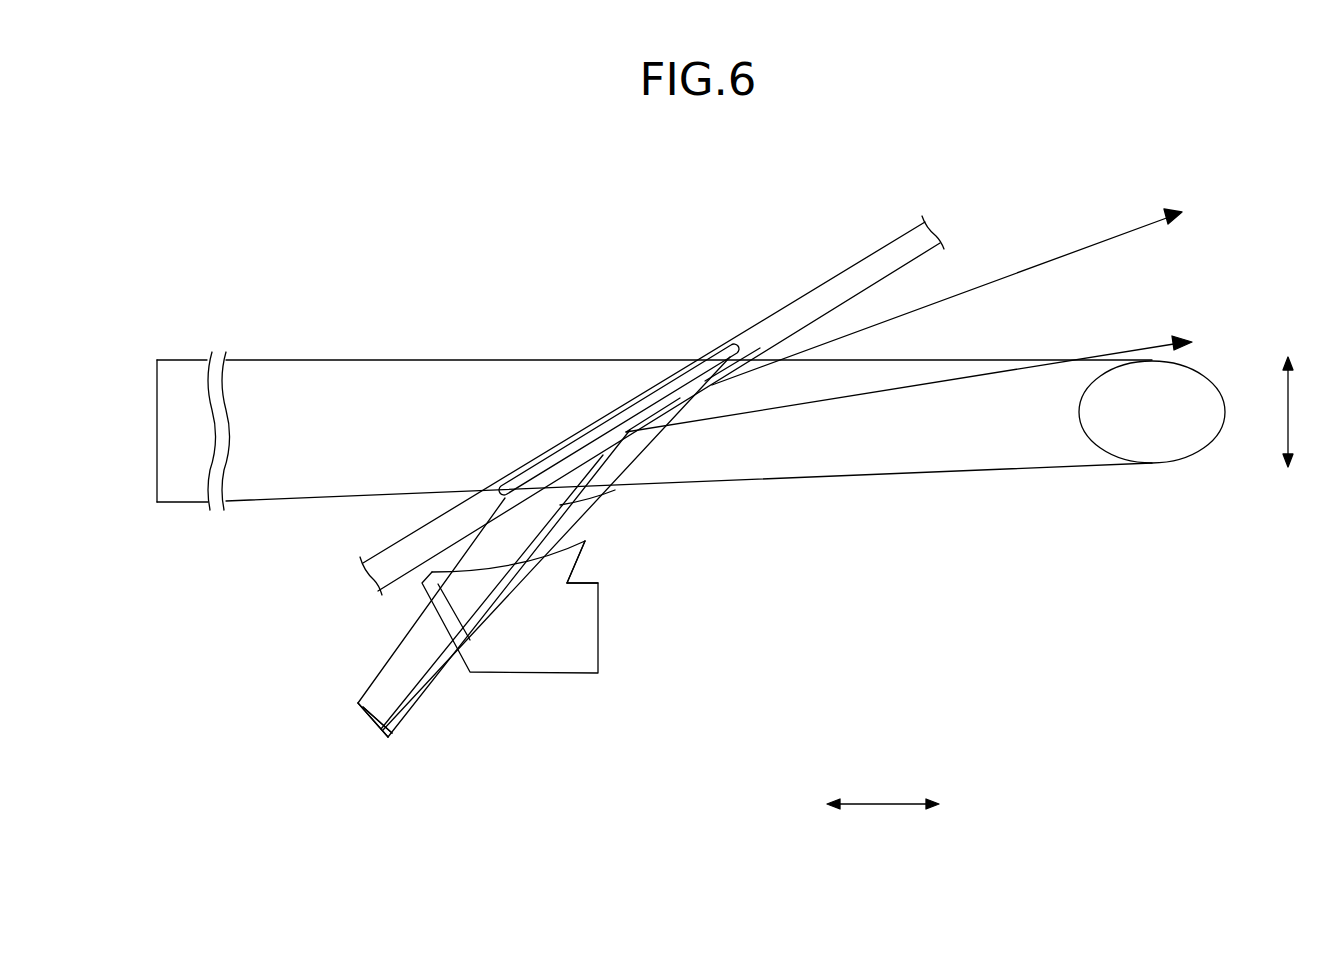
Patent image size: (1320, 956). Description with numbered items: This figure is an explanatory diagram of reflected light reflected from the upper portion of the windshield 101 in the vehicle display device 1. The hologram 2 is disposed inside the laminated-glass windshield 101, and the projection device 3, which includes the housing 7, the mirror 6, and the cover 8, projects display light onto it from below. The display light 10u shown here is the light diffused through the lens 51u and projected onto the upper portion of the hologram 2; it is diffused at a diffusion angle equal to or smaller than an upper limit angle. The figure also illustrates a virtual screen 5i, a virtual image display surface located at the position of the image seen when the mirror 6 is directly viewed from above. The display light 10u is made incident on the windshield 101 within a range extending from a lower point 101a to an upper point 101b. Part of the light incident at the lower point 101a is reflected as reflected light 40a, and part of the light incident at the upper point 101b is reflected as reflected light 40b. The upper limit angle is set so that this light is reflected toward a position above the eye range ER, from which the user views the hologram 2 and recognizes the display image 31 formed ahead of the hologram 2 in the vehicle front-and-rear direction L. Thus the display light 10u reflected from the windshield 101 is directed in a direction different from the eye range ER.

The vehicle display device 1 is at (534, 216).
The hologram 2 is at (612, 420).
The projection device 3 is at (608, 571).
The virtual screen 5i is at (358, 724).
The mirror 6 is at (480, 652).
The housing 7 is at (598, 639).
The cover 8 is at (592, 544).
The display light 10u is at (526, 549).
The display image 31 is at (157, 420).
The reflected light 40a is at (960, 373).
The reflected light 40b is at (1010, 272).
The lens 51u is at (385, 740).
The windshield 101 is at (778, 290).
The lower point 101a is at (626, 432).
The upper point 101b is at (710, 380).
The eye range ER is at (1190, 385).
The height H is at (1296, 412).
The vehicle front-and-rear direction L is at (883, 793).